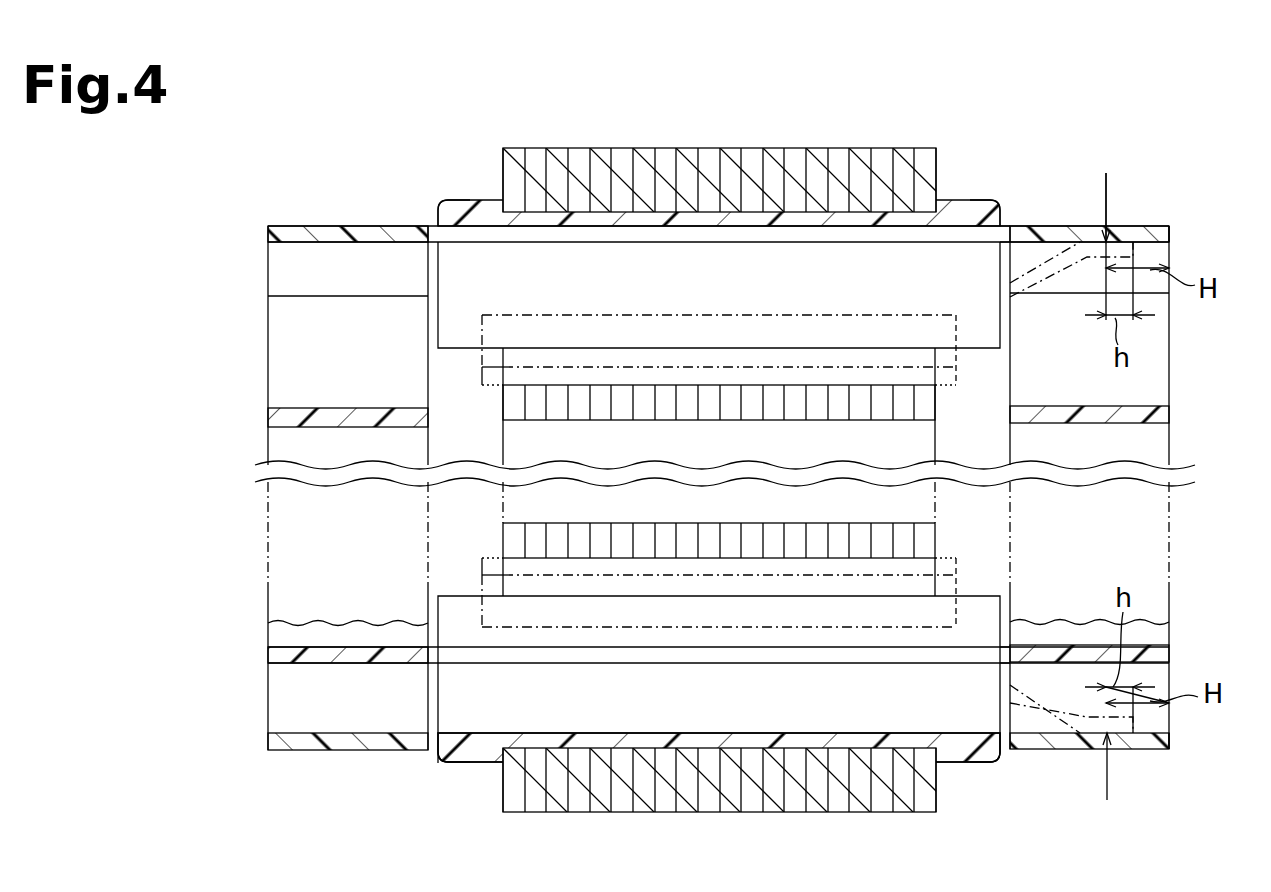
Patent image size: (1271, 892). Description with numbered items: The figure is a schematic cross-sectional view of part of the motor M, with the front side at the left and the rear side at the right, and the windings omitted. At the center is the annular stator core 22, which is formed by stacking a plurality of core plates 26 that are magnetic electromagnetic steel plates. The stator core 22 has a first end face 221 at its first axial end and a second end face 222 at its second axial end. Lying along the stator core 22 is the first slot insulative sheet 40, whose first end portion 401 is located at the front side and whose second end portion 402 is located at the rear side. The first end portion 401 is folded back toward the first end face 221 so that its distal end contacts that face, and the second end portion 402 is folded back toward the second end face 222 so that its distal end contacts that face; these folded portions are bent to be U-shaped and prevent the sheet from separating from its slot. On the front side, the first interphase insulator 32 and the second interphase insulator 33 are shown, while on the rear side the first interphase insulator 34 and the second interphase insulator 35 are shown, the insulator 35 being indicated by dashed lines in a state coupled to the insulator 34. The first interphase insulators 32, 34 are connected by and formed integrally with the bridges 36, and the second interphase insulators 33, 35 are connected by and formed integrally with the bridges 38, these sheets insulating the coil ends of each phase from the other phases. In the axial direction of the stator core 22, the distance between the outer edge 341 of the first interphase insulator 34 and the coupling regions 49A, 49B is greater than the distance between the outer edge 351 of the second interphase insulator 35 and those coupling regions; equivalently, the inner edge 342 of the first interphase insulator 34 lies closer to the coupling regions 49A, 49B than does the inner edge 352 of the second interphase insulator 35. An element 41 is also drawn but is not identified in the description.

The motor M is at (322, 122).
The stator core 22 is at (773, 153).
The core plates 26 is at (597, 812).
The first end face 221 is at (503, 160).
The second end face 222 is at (937, 160).
The first interphase insulator 32 is at (400, 232).
The second interphase insulator 33 is at (282, 347).
The first interphase insulator 34 is at (1050, 232).
The outer edge 341 is at (1169, 228).
The inner edge 342 is at (1003, 237).
The second interphase insulator 35 is at (1058, 277).
The outer edge 351 is at (1137, 247).
The inner edge 352 is at (1006, 291).
The bridges 36 is at (688, 243).
The bridges 38 is at (733, 657).
The first slot insulative sheet 40 is at (607, 228).
The first end portion 401 is at (468, 203).
The second end portion 402 is at (986, 203).
The rotor magnet holder 41 is at (482, 380).
The coupling region 49A is at (1109, 193).
The coupling region 49B is at (1109, 783).